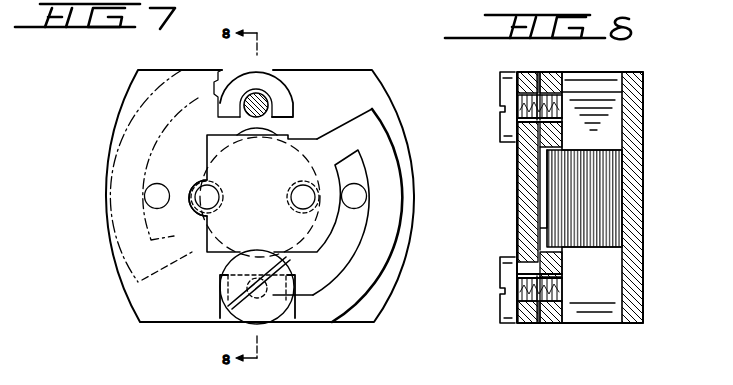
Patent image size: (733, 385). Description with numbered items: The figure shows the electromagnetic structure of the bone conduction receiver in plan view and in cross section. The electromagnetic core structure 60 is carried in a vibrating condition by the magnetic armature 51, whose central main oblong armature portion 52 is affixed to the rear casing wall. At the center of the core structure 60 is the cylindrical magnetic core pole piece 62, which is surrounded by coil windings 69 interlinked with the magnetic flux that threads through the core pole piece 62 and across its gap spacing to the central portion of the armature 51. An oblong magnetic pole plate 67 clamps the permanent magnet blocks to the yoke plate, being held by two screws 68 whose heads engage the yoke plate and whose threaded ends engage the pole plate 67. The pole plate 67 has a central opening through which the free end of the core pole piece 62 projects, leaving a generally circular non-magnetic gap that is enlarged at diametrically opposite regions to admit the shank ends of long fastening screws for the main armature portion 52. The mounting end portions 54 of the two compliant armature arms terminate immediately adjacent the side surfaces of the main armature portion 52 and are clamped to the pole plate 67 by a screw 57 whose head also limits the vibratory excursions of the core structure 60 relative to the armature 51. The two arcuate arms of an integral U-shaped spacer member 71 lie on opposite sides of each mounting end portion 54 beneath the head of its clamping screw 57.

In FIG. 7, the magnetic armature 51 is at (307, 140).
In FIG. 7, the main oblong armature portion 52 is at (262, 206).
In FIG. 8, the main oblong armature portion 52 is at (517, 222).
In FIG. 7, the mounting end portions 54 is at (293, 72).
In FIG. 7, the screw 57 is at (263, 92).
In FIG. 8, the screw 57 is at (500, 128).
In FIG. 8, the electromagnetic core structure 60 is at (652, 147).
In FIG. 8, the cylindrical magnetic core pole piece 62 is at (603, 214).
In FIG. 7, the oblong magnetic pole plate 67 is at (201, 205).
In FIG. 8, the oblong magnetic pole plate 67 is at (556, 324).
In FIG. 7, the screws 68 is at (153, 198).
In FIG. 8, the coil windings 69 is at (592, 197).
In FIG. 7, the U-shaped spacer member 71 is at (276, 93).
In FIG. 8, the U-shaped spacer member 71 is at (540, 72).